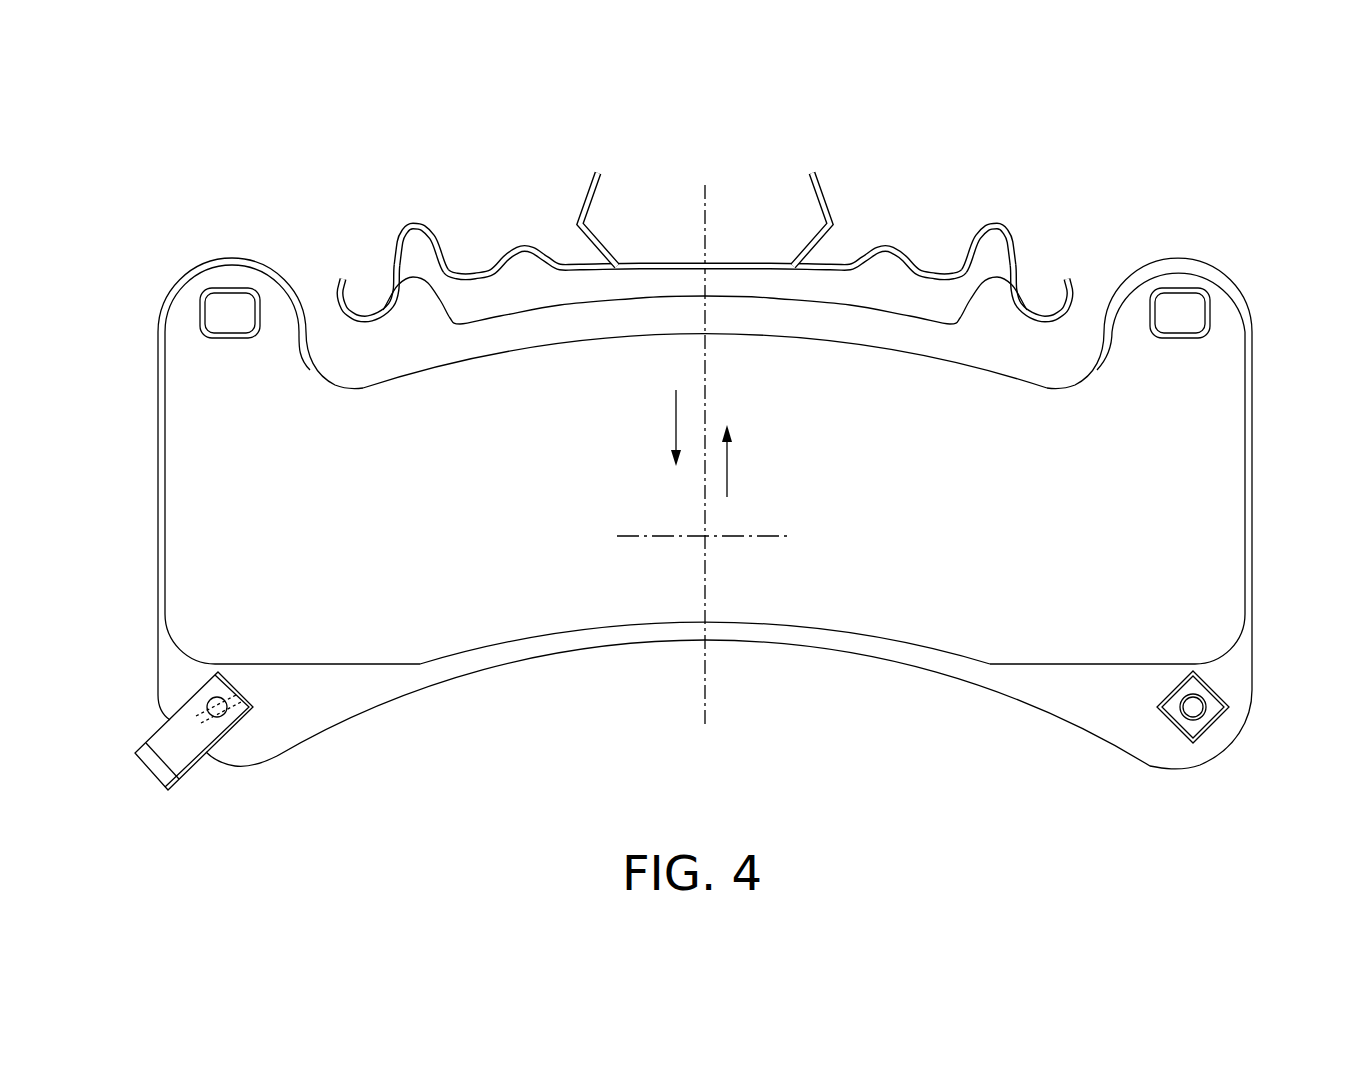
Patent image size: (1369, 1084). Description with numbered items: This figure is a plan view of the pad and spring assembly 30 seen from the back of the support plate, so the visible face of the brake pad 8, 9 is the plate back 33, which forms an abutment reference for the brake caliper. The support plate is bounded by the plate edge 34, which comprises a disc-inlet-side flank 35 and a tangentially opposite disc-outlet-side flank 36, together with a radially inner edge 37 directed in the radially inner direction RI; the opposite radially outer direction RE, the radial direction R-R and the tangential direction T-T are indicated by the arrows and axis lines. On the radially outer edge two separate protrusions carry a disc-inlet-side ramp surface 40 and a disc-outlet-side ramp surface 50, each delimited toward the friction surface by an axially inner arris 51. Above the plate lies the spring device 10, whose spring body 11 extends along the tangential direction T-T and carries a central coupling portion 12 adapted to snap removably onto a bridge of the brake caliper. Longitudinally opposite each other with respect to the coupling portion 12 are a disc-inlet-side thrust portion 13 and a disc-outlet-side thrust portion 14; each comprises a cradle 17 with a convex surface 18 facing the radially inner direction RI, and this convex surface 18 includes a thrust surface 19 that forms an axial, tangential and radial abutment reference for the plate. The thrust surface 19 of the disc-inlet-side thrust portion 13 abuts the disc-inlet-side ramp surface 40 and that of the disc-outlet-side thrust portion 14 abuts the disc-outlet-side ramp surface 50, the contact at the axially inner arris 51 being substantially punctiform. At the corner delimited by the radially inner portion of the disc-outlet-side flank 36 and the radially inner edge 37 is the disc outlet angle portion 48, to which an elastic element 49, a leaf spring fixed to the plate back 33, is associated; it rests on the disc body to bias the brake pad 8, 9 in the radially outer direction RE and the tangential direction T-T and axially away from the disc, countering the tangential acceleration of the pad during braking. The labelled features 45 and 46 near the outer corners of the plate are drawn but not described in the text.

The pad and spring assembly 30 is at (97, 203).
The plate back 33 is at (212, 421).
The plate edge 34 is at (351, 719).
The disc-inlet-side flank 35 is at (1258, 485).
The disc-outlet-side flank 36 is at (154, 557).
The radially inner edge 37 is at (901, 668).
The disc-inlet-side ramp surface 40 is at (1057, 330).
The disc-outlet-side ramp surface 50 is at (360, 327).
The ear 45 is at (193, 287).
The opening 46 is at (233, 303).
The disc outlet angle portion 48 is at (263, 745).
The elastic element 49 is at (140, 767).
The brake pad 8 is at (1166, 533).
The brake pad 9 is at (1237, 667).
The spring device 10 is at (732, 217).
The spring body 11 is at (627, 262).
The coupling portion 12 is at (600, 172).
The disc-inlet-side thrust portion 13 is at (1033, 295).
The disc-outlet-side thrust portion 14 is at (340, 295).
The cradle 17 is at (357, 298).
The convex surface 18 is at (337, 325).
The thrust surface 19 is at (388, 295).
The axially inner arris 51 is at (360, 327).
The radial direction R-R is at (705, 190).
The tangential direction T-T is at (753, 535).
The radially inner direction RI is at (673, 427).
The radially outer direction RE is at (727, 472).